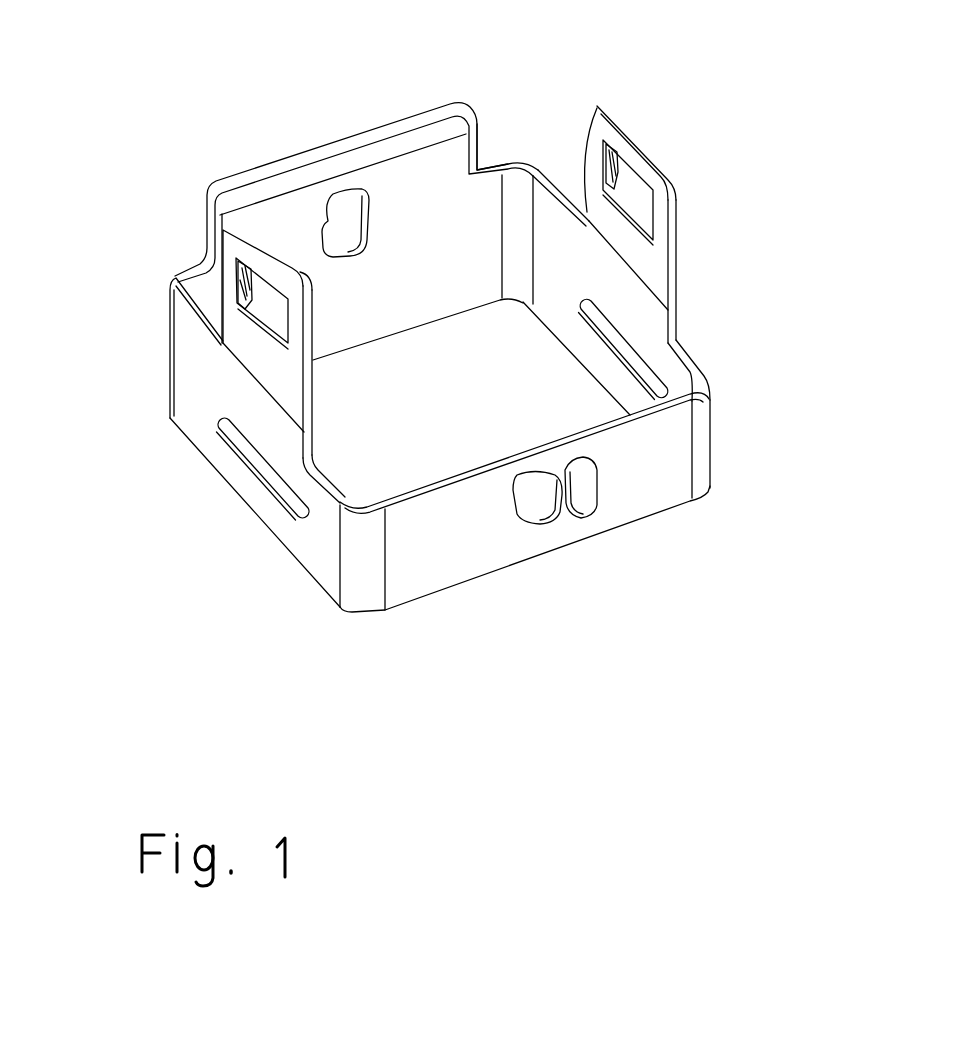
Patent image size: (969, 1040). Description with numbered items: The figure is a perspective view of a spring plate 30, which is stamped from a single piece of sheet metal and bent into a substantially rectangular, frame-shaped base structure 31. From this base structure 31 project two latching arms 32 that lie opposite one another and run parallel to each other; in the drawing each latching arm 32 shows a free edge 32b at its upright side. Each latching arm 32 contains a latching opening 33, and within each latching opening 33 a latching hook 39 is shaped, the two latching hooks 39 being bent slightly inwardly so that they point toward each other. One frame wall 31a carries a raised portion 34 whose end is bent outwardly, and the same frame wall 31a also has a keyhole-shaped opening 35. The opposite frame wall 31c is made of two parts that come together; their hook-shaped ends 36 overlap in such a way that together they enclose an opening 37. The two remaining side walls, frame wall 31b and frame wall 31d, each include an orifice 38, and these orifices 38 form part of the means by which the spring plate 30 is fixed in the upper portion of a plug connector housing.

The spring plate 30 is at (697, 158).
The base structure 31 is at (680, 537).
The frame wall 31a is at (430, 283).
The frame wall 31b is at (217, 400).
The frame wall 31c is at (428, 550).
The frame wall 31d is at (673, 373).
The latching arm 32 is at (252, 352).
The bent free edge of retaining tab 32b is at (307, 337).
The latching opening 33 is at (247, 323).
The raised portion 34 is at (480, 136).
The keyhole-shaped opening 35 is at (340, 210).
The hook-shaped end 36 is at (517, 470).
The opening 37 is at (540, 507).
The orifice 38 is at (237, 460).
The latching hook 39 is at (240, 292).